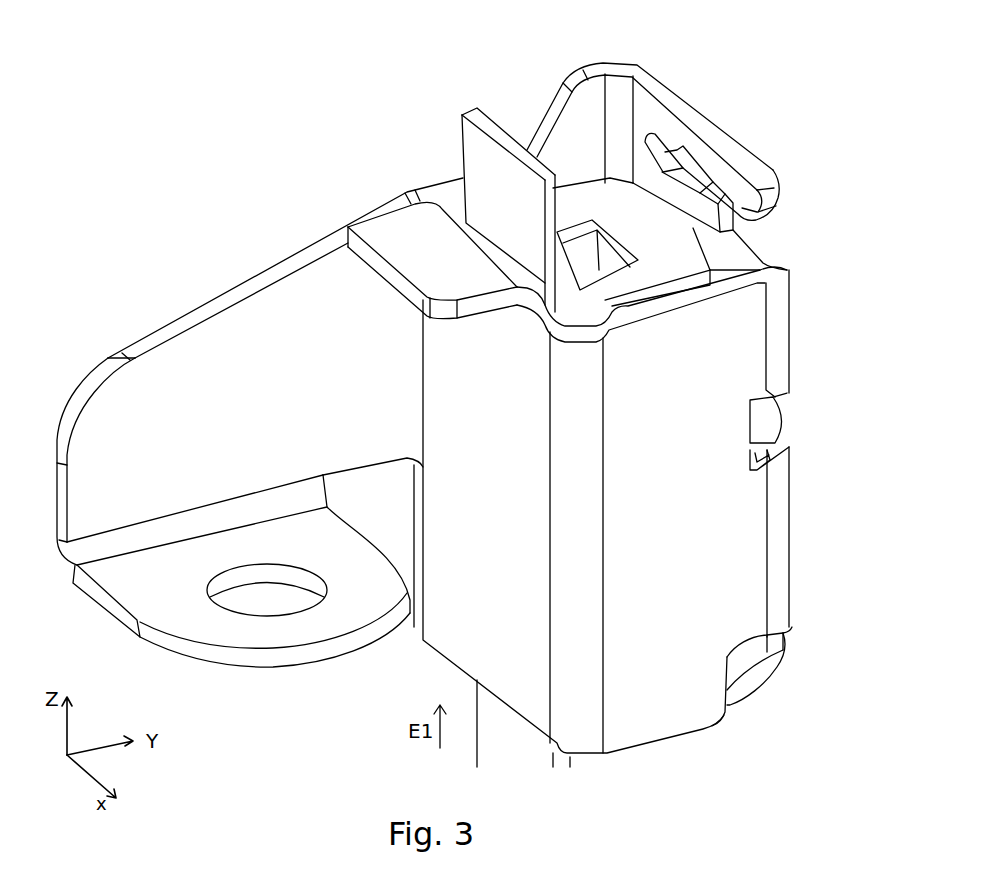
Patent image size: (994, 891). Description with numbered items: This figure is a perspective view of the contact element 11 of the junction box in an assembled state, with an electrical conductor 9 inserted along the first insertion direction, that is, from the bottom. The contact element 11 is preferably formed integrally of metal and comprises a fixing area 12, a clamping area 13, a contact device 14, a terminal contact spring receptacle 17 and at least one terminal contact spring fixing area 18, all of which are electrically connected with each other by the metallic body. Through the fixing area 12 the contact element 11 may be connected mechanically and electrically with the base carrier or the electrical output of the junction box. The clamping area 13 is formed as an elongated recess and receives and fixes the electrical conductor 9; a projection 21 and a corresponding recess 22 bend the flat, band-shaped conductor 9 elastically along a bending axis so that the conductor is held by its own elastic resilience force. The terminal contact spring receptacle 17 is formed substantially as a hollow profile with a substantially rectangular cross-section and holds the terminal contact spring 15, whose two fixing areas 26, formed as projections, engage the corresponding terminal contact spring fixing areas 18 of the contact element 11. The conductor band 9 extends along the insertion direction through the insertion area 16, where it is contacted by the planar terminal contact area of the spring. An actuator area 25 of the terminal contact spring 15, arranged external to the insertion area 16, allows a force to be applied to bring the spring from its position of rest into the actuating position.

The electrical conductor 9 is at (507, 211).
The contact element 11 is at (205, 187).
The fixing area 12 is at (180, 601).
The clamping area 13 is at (780, 221).
The contact device 14 is at (449, 279).
The terminal contact spring 15 is at (675, 269).
The insertion area 16 is at (724, 746).
The terminal contact spring receptacle 17 is at (704, 292).
The terminal contact spring fixing area 18 is at (775, 454).
The projection 21 is at (698, 214).
The recess 22 is at (702, 158).
The actuator area 25 is at (608, 276).
The fixing area of the terminal contact spring 26 is at (770, 409).